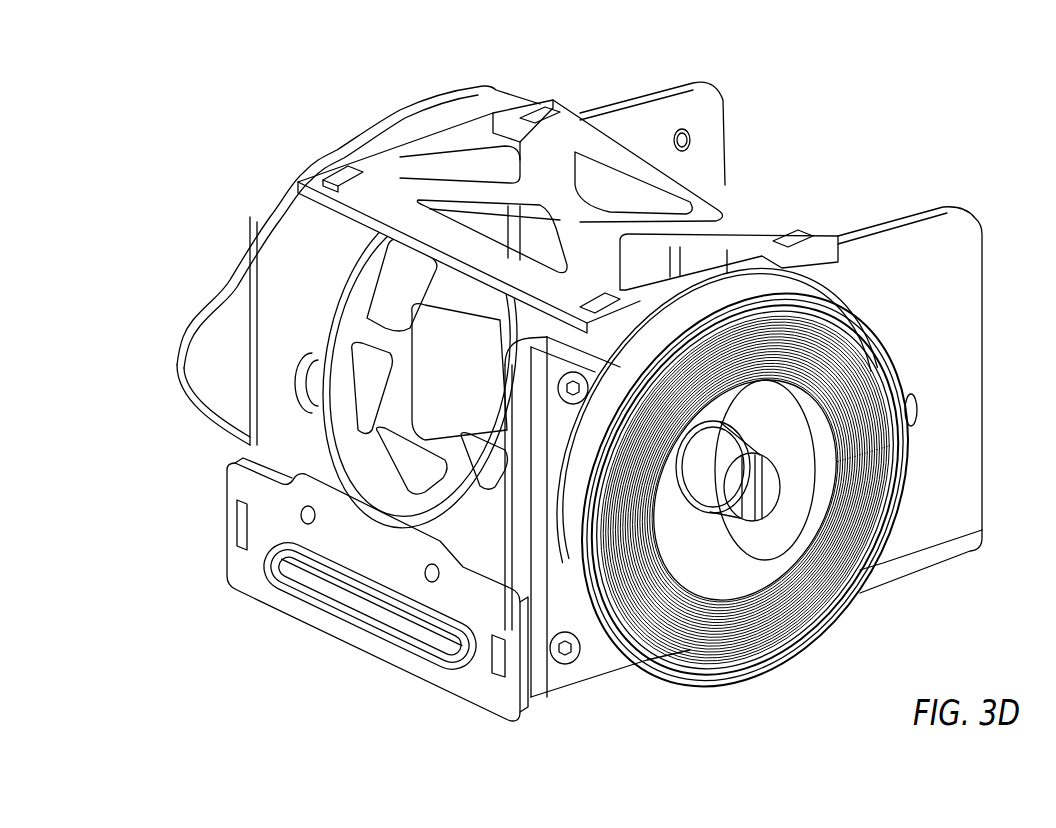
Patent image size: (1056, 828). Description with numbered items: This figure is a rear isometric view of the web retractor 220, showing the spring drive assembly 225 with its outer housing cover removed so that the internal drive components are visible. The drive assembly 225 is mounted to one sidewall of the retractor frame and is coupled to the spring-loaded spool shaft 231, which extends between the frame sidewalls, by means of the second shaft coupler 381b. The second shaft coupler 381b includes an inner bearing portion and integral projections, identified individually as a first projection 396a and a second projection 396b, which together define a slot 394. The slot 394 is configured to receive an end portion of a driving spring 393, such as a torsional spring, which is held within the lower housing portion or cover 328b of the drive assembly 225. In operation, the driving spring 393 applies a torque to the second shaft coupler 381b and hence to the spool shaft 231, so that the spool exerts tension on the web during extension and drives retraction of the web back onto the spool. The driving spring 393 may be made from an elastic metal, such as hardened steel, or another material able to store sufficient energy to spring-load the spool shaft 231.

The web retractor 220 is at (857, 92).
The spring drive assembly 225 is at (893, 301).
The spool shaft 231 is at (408, 302).
The lower housing portion 328b is at (738, 290).
The second shaft coupler 381b is at (765, 400).
The driving spring 393 is at (855, 562).
The slot 394 is at (782, 503).
The first projection 396a is at (758, 505).
The second projection 396b is at (765, 487).